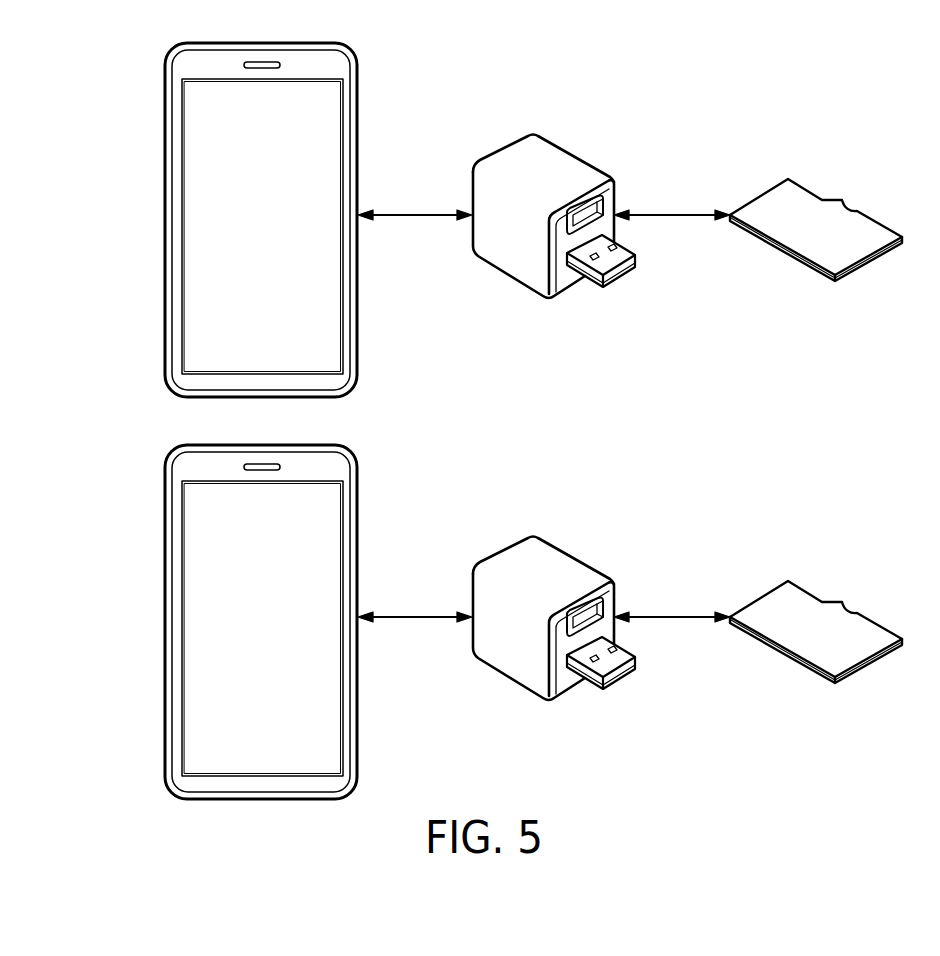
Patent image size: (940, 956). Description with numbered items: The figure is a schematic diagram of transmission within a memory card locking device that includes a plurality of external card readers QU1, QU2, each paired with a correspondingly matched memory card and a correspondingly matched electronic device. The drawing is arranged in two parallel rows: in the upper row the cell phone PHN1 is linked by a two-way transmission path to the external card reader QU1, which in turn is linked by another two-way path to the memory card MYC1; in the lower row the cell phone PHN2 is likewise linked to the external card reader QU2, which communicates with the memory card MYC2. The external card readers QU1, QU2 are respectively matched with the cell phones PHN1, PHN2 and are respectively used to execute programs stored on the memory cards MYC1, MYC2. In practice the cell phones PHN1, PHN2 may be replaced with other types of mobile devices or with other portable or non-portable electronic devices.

The cell phone PHN1 is at (165, 220).
The cell phone PHN2 is at (199, 622).
The external card reader QU1 is at (513, 166).
The external card reader QU2 is at (548, 587).
The memory card MYC1 is at (805, 201).
The memory card MYC2 is at (816, 603).